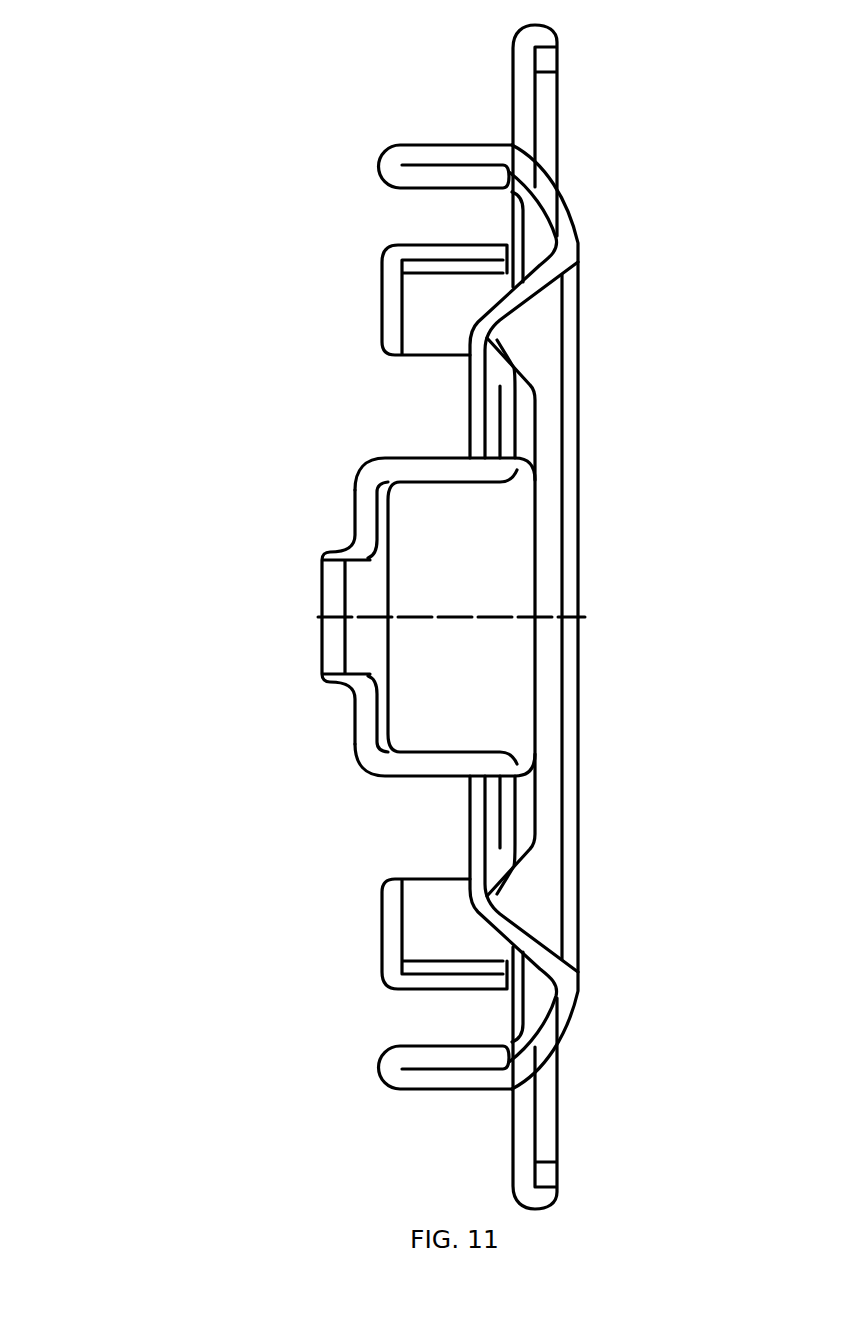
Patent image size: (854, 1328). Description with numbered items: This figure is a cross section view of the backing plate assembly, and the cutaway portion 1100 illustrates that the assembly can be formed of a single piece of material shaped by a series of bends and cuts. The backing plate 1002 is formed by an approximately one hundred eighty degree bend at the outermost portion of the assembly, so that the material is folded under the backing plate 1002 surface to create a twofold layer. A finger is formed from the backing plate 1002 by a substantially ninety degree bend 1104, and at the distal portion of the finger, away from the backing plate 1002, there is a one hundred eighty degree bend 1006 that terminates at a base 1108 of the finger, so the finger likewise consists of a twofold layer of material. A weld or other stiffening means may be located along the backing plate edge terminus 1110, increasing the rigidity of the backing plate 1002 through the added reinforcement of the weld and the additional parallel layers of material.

The cutaway portion 1100 is at (158, 343).
The backing plate 1002 is at (469, 617).
The substantially 90 degree bend 1104 is at (533, 1077).
The base 1108 is at (452, 619).
The backing plate edge terminus 1110 is at (560, 1040).
The bend 1006 is at (378, 1063).